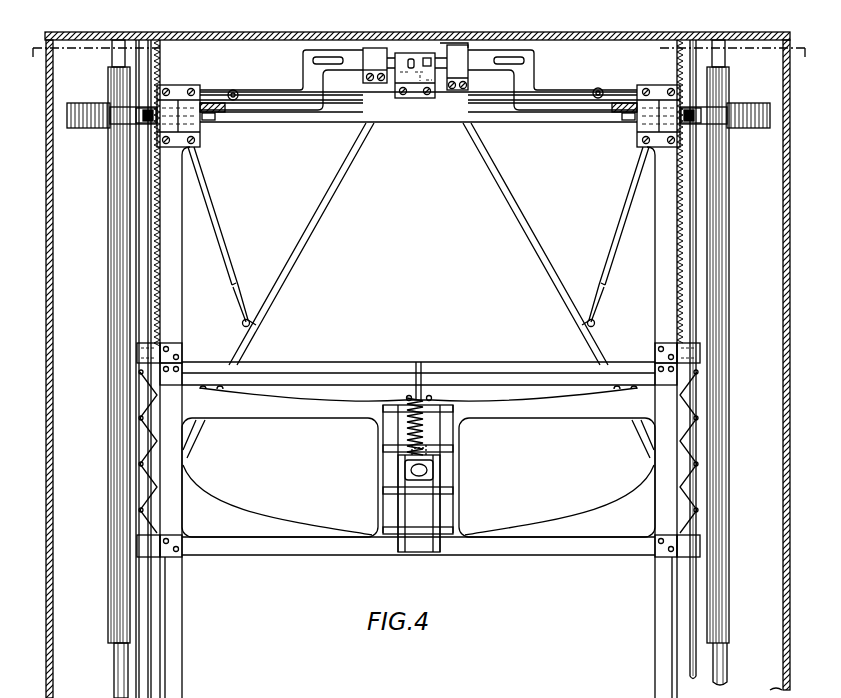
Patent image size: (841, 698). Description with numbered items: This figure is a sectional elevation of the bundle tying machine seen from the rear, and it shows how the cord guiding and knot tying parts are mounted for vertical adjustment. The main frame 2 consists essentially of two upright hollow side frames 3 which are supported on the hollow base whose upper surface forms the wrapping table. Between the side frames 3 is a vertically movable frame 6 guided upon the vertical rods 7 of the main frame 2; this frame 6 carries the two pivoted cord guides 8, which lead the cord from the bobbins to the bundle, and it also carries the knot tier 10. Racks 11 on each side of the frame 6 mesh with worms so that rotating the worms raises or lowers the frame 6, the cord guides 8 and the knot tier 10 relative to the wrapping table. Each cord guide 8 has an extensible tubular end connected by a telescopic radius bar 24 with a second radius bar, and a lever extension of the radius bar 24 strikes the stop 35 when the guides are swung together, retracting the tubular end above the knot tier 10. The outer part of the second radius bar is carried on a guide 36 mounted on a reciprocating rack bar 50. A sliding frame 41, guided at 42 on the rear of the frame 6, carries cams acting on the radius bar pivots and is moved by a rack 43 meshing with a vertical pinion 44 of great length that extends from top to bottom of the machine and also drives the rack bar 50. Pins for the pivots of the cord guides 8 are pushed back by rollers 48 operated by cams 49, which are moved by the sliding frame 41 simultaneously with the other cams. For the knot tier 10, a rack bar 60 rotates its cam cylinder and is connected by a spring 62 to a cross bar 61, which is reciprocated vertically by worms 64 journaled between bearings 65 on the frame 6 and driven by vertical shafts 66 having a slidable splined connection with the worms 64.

The main frame 2 is at (300, 48).
The upright hollow side frames 3 is at (415, 365).
The vertically movable frame 6 is at (327, 371).
The vertical rods 7 is at (183, 628).
The pivoted cord guides 8 is at (418, 290).
The knot tier 10 is at (454, 471).
The racks 11 is at (161, 308).
The telescopic radius bar 24 is at (217, 227).
The stop 35 is at (234, 90).
The guide 36 is at (210, 121).
The sliding frame 41 is at (85, 103).
The guide for sliding frame 42 is at (200, 81).
The rack 43 is at (418, 125).
The vertical pinion 44 is at (109, 245).
The rollers 48 is at (432, 62).
The cams 49 is at (386, 50).
The reciprocating rack bar 50 is at (235, 113).
The rack bar 60 is at (405, 436).
The cross bar 61 is at (453, 374).
The spring 62 is at (418, 400).
The worms 64 is at (147, 473).
The bearings 65 is at (140, 352).
The vertical shafts 66 is at (147, 592).